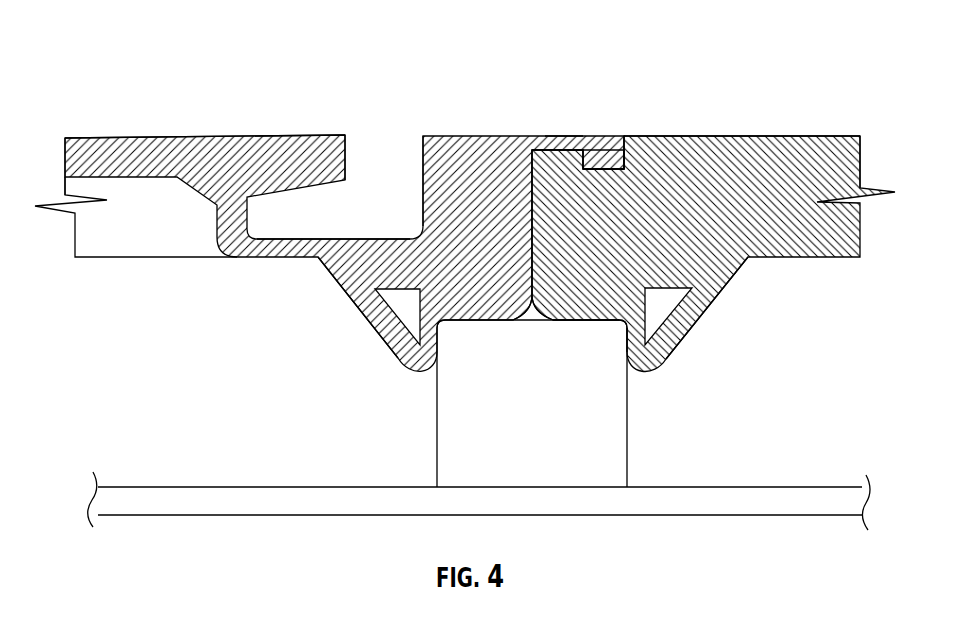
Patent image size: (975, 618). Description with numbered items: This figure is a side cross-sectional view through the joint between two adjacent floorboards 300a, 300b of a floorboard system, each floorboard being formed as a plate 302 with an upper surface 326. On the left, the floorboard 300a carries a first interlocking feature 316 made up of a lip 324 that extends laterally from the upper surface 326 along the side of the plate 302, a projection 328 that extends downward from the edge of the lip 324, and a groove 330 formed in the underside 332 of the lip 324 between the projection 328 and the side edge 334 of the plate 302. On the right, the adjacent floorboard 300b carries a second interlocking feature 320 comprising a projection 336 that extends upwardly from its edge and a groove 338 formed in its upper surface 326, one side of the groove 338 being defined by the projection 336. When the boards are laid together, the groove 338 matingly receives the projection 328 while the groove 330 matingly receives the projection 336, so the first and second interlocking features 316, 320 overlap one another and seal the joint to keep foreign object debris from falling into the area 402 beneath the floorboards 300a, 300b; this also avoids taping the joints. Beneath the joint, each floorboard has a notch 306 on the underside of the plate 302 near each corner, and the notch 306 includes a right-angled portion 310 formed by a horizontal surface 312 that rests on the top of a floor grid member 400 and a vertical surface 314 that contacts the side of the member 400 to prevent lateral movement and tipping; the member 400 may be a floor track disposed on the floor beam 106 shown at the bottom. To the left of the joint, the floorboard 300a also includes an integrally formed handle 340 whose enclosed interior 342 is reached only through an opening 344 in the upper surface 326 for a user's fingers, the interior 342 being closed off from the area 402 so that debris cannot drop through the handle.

The floorboard 300a is at (96, 135).
The adjacent floorboard 300b is at (835, 134).
The plate 302 is at (65, 157).
The upper surface 326 is at (160, 136).
The handle 340 is at (345, 153).
The opening 344 is at (423, 153).
The enclosed interior 342 is at (368, 240).
The groove 330 is at (553, 150).
The second interlocking feature 320 is at (546, 148).
The first interlocking feature 316 is at (567, 134).
The projection 336 is at (584, 158).
The lip 324 is at (617, 155).
The projection 328 is at (626, 148).
The groove 338 is at (606, 168).
The underside 332 is at (593, 171).
The side edge 334 is at (535, 254).
The notch 306 is at (362, 321).
The horizontal surface 312 is at (567, 322).
The member 400 is at (437, 418).
The right-angled portion 310 is at (602, 348).
The vertical surface 314 is at (622, 345).
The area 402 is at (226, 392).
The floor beam 106 is at (735, 487).